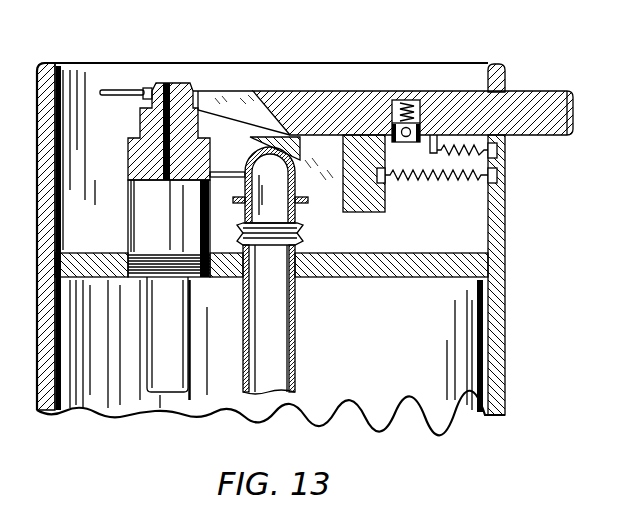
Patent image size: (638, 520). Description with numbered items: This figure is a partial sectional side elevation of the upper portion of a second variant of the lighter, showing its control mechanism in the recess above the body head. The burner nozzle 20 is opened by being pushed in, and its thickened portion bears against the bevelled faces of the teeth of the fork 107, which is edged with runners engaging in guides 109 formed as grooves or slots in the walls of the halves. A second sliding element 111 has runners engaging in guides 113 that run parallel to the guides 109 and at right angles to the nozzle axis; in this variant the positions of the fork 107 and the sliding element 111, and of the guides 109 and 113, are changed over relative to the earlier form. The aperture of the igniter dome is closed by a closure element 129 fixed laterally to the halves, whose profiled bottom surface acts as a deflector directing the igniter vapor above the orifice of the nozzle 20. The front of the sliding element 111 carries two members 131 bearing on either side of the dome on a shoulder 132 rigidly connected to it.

The nozzle 20 is at (186, 81).
The fork 107 is at (541, 93).
The guides 109 is at (105, 97).
The sliding element 111 is at (385, 203).
The guides 113 is at (216, 172).
The closure element 129 is at (300, 144).
The members 131 is at (306, 201).
The shoulder 132 is at (303, 222).